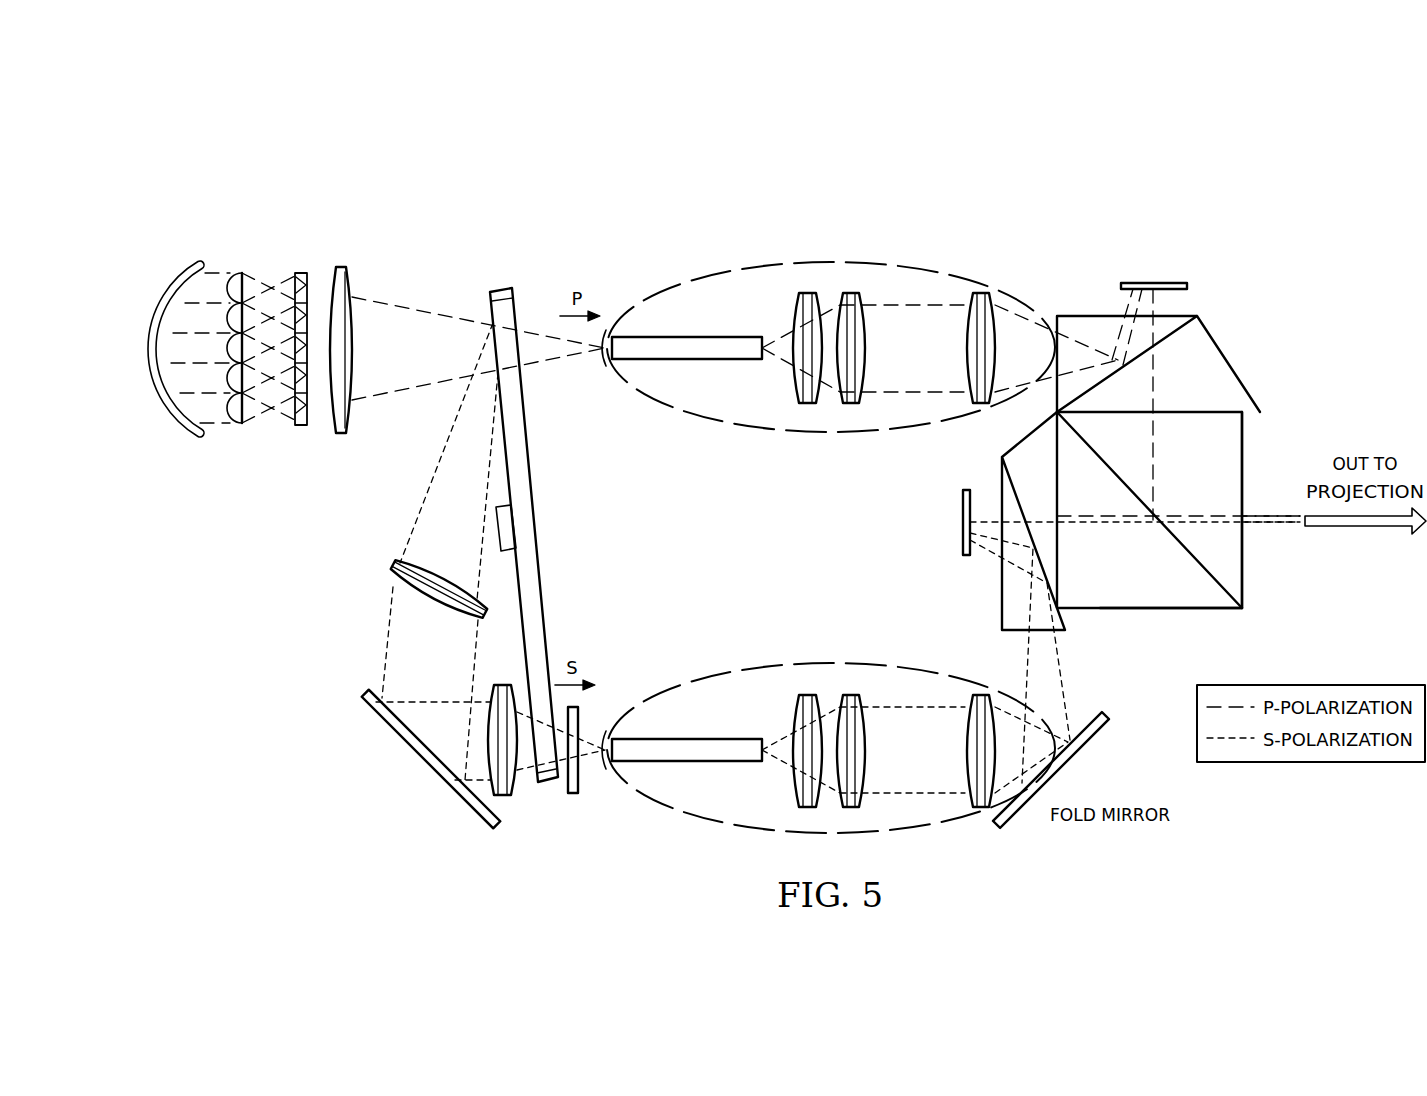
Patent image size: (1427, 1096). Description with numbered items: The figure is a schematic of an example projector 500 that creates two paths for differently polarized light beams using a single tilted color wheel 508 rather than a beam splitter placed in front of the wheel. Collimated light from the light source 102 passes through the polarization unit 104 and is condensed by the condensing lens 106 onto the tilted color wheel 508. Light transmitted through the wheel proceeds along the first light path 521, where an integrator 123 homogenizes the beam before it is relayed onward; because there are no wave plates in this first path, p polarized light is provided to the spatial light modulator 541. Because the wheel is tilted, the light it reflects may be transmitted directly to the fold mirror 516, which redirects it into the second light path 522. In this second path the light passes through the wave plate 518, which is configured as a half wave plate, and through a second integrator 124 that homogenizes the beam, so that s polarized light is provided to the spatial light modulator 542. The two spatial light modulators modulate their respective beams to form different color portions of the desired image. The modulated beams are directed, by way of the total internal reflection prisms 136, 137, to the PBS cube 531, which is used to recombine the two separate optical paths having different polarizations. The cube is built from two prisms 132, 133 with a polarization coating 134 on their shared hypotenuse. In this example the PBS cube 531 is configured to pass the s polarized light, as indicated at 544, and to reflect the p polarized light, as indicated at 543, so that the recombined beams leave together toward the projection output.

The projector 500 is at (1148, 152).
The light source 102 is at (190, 262).
The polarization unit 104 is at (300, 430).
The condensing lens 106 is at (337, 265).
The integrator 123 is at (708, 337).
The integrator 124 is at (708, 762).
The prism 132 is at (1150, 600).
The prism 133 is at (1233, 448).
The polarization coating 134 is at (1105, 465).
The total internal reflection prism 136 is at (1178, 340).
The total internal reflection prism 137 is at (1010, 482).
The tilted color wheel 508 is at (538, 490).
The fold mirror 516 is at (425, 760).
The wave plate 518 is at (575, 797).
The first light path 521 is at (772, 430).
The second light path 522 is at (682, 686).
The PBS cube 531 is at (1197, 610).
The spatial light modulator 541 is at (1162, 282).
The spatial light modulator 542 is at (962, 500).
The reflected p polarized light 543 is at (1262, 512).
The passed s polarized light 544 is at (1266, 528).